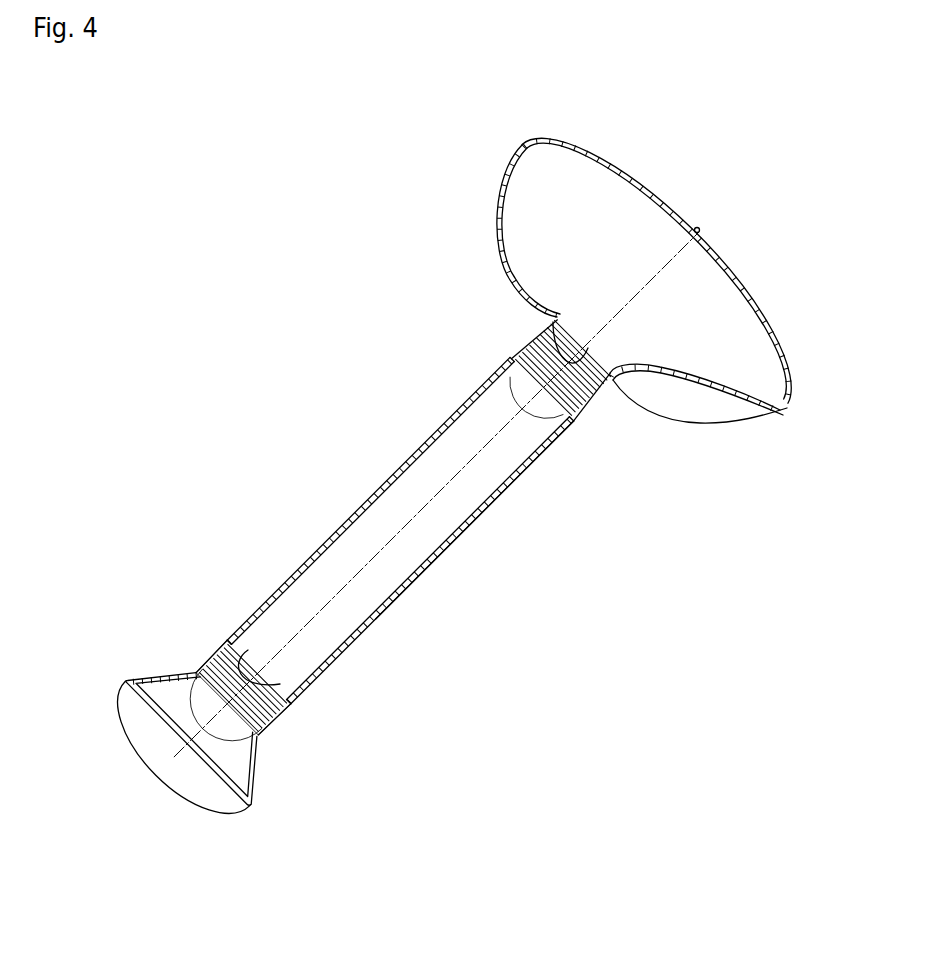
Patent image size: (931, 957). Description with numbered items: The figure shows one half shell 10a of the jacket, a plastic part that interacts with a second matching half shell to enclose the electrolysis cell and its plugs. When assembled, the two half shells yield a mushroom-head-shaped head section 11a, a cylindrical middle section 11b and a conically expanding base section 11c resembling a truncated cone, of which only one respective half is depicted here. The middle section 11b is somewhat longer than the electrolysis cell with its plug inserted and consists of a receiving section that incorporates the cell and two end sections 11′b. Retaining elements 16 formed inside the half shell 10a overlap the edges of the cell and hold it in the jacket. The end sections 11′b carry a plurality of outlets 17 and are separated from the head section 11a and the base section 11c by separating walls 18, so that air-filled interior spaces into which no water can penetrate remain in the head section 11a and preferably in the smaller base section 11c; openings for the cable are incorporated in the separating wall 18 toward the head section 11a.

The half shell 10a is at (375, 489).
The retaining elements 16 is at (512, 353).
The head section 11a is at (615, 210).
The middle section 11b is at (430, 540).
The end sections 11′b is at (212, 663).
The base section 11c is at (195, 790).
The outlets 17 is at (587, 407).
The separating walls 18 is at (600, 360).